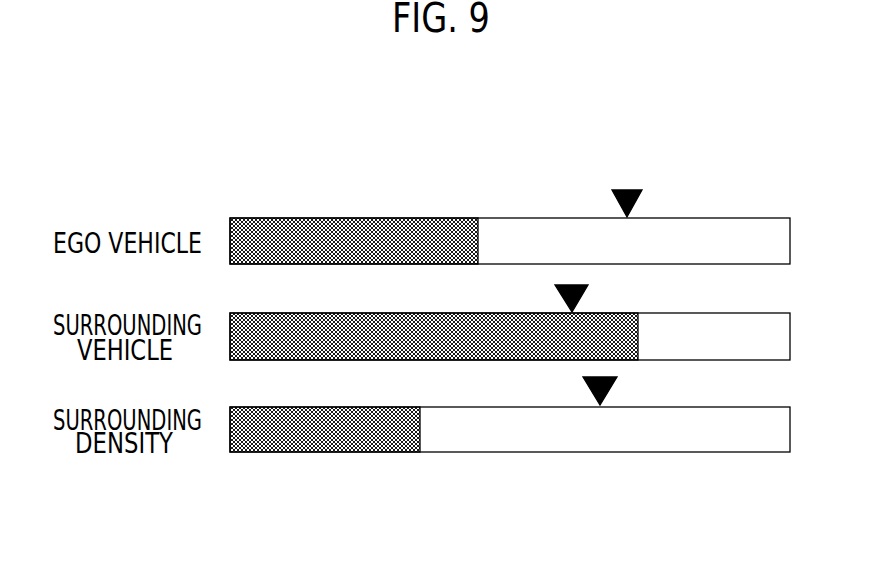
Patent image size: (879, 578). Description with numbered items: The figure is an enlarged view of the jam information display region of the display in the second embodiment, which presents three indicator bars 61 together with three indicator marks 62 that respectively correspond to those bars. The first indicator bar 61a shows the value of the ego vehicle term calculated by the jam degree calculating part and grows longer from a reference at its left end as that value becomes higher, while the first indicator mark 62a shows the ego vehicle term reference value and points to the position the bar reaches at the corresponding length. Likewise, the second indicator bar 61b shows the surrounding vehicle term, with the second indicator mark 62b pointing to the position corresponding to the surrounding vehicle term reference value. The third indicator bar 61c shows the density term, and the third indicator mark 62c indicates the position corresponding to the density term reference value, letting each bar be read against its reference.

The indicator bars 61 is at (434, 341).
The first indicator bar 61a is at (372, 218).
The second indicator bar 61b is at (508, 313).
The third indicator bar 61c is at (353, 452).
The indicator marks 62 is at (644, 331).
The first indicator mark 62a is at (640, 190).
The second indicator mark 62b is at (586, 294).
The third indicator mark 62c is at (591, 388).